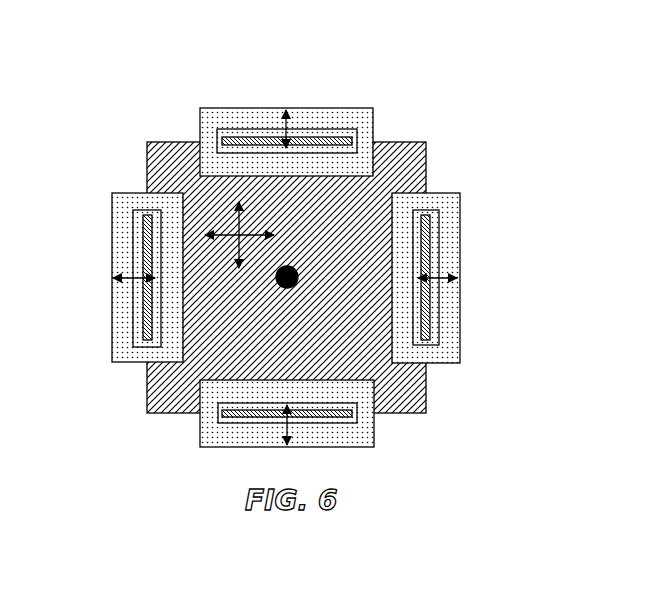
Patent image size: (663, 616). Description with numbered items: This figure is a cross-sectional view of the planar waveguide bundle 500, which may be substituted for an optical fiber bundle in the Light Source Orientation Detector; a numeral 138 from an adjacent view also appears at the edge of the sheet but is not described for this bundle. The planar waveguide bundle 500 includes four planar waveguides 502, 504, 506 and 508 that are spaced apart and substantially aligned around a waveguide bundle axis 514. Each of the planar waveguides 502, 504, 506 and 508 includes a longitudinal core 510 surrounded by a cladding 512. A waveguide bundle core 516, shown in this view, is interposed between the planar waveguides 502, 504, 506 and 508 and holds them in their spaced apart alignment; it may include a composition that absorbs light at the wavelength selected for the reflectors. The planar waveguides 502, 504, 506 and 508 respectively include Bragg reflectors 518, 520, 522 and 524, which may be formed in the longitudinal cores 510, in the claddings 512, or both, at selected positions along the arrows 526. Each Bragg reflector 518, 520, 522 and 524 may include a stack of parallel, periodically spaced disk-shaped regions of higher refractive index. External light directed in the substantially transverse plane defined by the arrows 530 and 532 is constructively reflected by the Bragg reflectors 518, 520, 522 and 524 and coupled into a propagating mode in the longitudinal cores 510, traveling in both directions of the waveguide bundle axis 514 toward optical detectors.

The reference from adjacent figure 138 is at (88, 0).
The planar waveguide bundle 500 is at (278, 249).
The planar waveguide 502 is at (309, 120).
The planar waveguide 504 is at (95, 277).
The planar waveguide 506 is at (469, 278).
The planar waveguide 508 is at (311, 439).
The longitudinal core 510 is at (352, 143).
The cladding 512 is at (350, 118).
The waveguide bundle axis 514 is at (290, 290).
The waveguide bundle core 516 is at (286, 277).
The Bragg reflector 518 is at (300, 140).
The Bragg reflector 520 is at (147, 298).
The Bragg reflector 522 is at (425, 305).
The Bragg reflector 524 is at (262, 415).
The arrows 526 is at (288, 118).
The arrow 530 is at (240, 218).
The arrow 532 is at (258, 238).